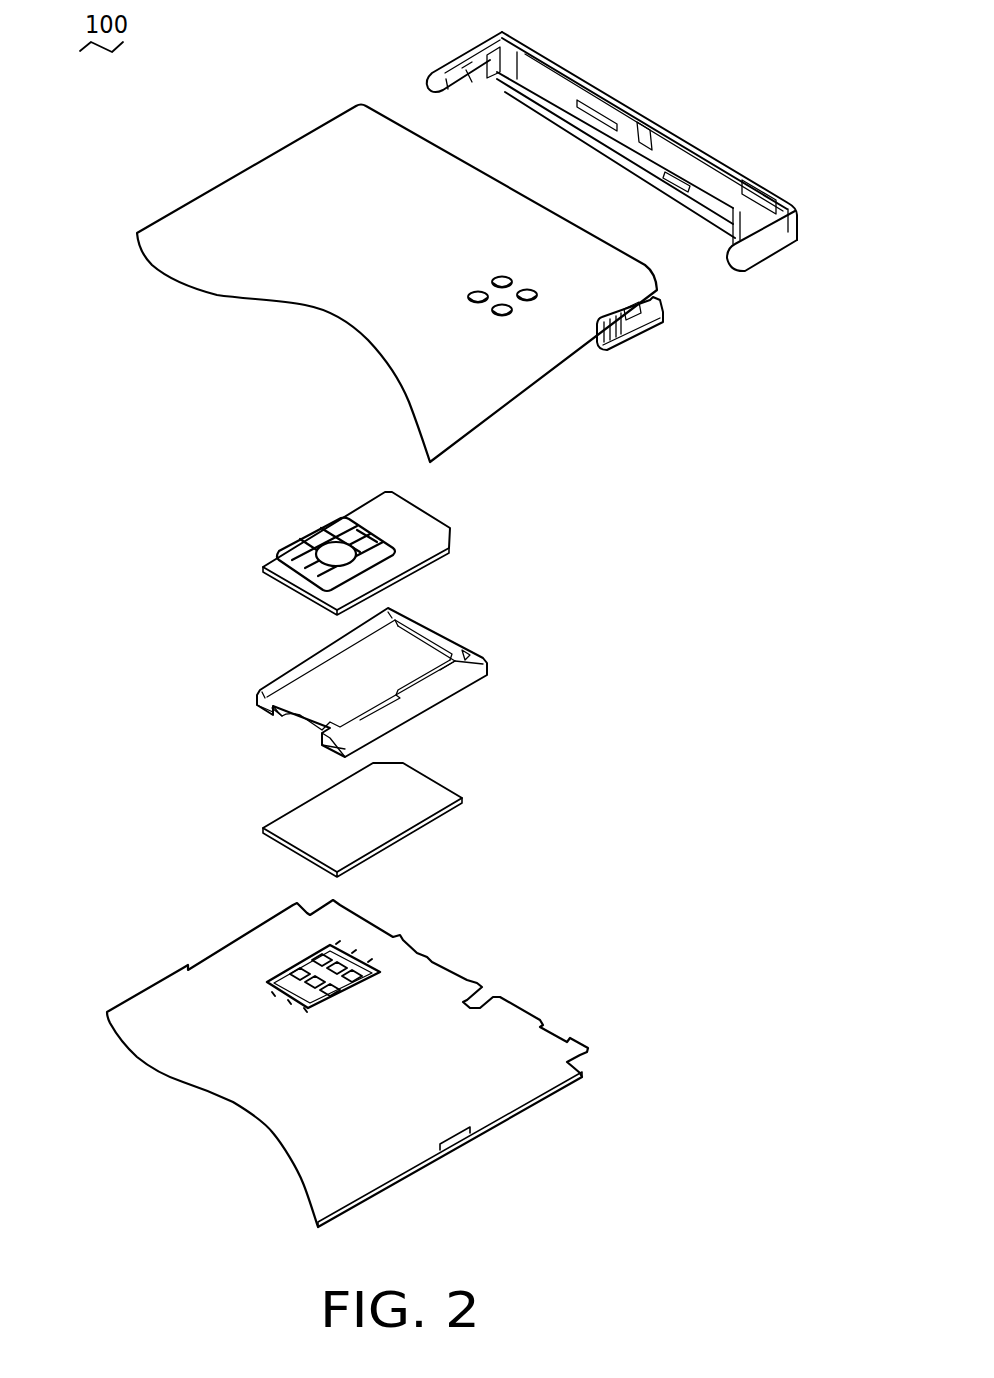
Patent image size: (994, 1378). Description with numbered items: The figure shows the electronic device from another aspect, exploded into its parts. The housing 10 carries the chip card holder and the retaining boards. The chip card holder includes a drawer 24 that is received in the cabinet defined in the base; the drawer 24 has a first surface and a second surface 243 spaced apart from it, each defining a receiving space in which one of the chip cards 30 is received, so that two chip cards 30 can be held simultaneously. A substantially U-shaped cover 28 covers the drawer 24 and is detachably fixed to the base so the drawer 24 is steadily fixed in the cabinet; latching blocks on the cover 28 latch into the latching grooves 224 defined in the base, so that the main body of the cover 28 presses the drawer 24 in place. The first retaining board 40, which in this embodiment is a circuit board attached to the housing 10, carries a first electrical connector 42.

The housing 10 is at (421, 284).
The latching groove 224 is at (625, 330).
The cover 28 is at (660, 127).
The chip card 30 is at (375, 525).
The drawer 24 is at (378, 682).
The second surface 243 is at (425, 682).
The first retaining board 40 is at (347, 1058).
The first electrical connector 42 is at (292, 972).